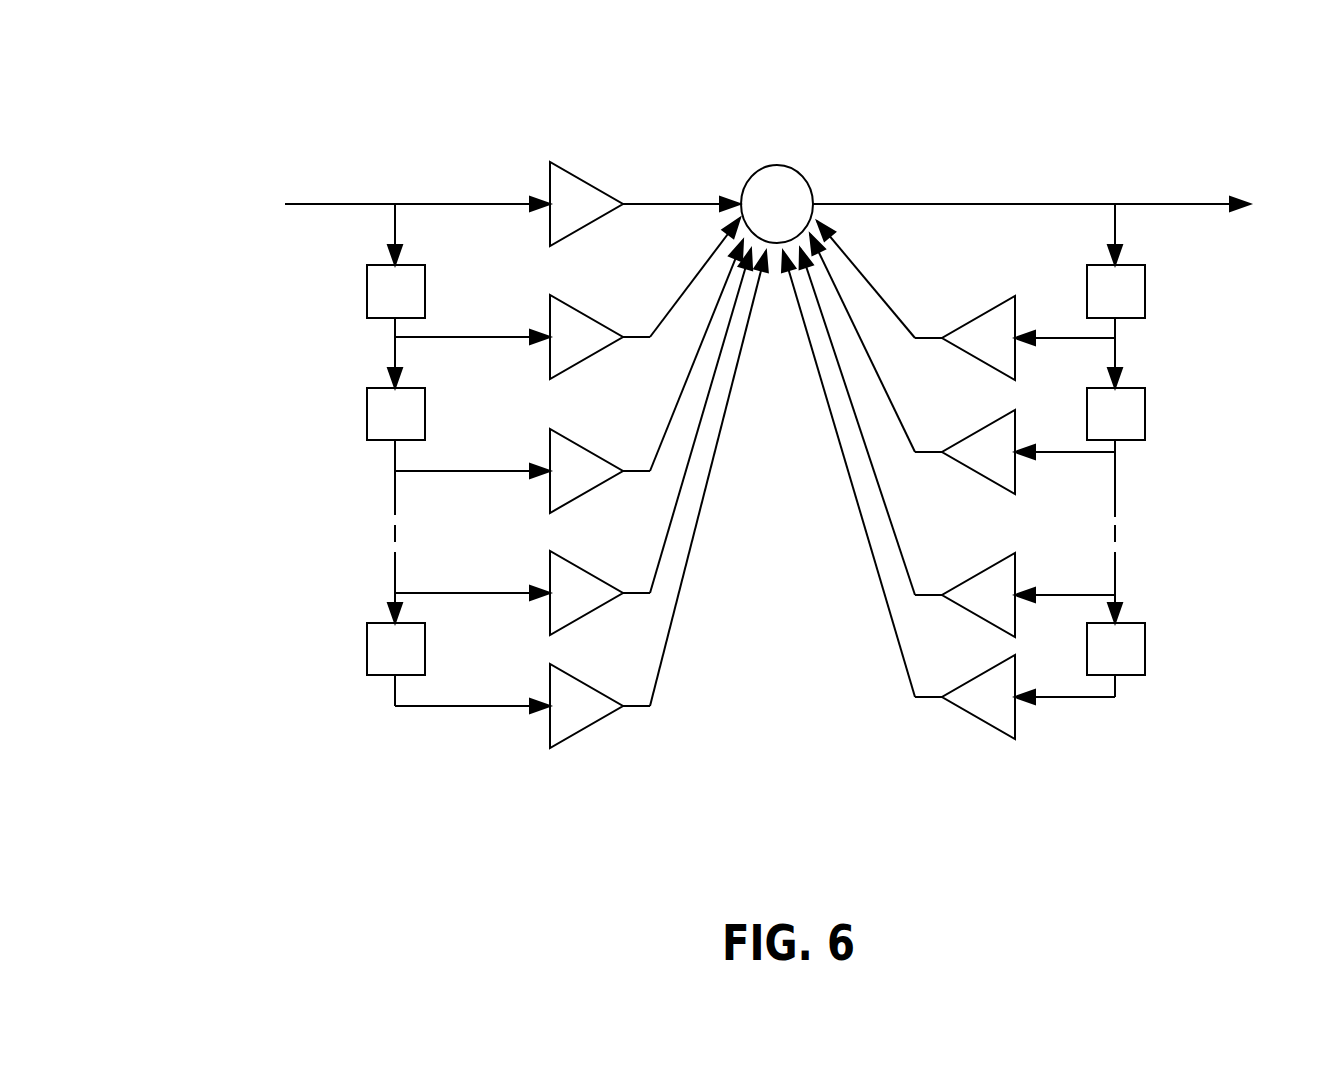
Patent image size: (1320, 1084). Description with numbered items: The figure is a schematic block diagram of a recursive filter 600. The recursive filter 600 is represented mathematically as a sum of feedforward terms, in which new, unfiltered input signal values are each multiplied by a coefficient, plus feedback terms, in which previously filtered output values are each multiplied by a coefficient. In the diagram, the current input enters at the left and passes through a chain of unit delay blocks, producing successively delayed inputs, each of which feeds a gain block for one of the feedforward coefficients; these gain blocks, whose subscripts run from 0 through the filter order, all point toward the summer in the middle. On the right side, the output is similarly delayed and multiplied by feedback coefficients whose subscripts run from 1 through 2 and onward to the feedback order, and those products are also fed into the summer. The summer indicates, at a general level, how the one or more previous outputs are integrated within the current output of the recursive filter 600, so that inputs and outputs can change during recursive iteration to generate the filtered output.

The recursive filter 600 is at (184, 64).
The feedforward coefficient multiplier b0 0 is at (586, 196).
The feedforward coefficient multiplier b1 1 is at (586, 329).
The feedforward coefficient multiplier b2 2 is at (586, 462).